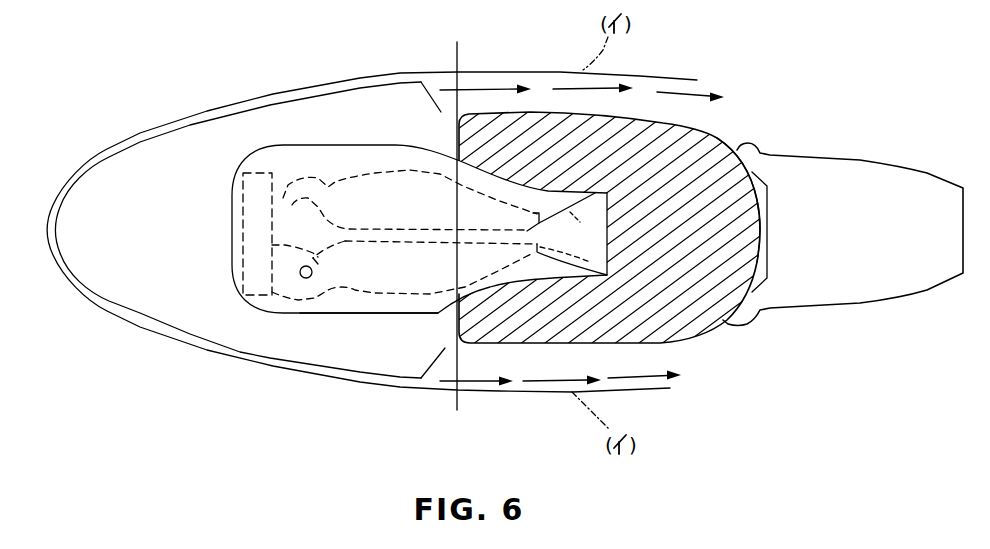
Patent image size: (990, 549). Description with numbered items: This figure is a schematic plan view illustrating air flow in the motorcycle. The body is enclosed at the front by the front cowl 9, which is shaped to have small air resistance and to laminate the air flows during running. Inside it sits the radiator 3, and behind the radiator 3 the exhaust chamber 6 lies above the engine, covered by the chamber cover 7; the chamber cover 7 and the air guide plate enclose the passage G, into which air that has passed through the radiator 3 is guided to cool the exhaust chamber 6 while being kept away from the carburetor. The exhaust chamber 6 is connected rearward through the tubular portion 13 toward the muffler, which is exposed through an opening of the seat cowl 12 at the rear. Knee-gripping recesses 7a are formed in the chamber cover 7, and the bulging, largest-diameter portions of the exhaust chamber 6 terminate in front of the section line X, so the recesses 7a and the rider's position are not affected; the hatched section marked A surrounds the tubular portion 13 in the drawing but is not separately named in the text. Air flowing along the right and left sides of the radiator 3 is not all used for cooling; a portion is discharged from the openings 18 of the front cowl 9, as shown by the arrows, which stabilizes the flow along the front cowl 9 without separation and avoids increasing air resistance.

The front cowl 9 is at (97, 178).
The openings 18 is at (428, 92).
The line X—X' X is at (466, 230).
The chamber cover 7 is at (350, 157).
The passage G is at (346, 313).
The radiator 3 is at (246, 236).
The exhaust chamber 6 is at (400, 182).
The tubular portion 13 is at (567, 236).
The knee-gripping recesses 7a is at (497, 176).
The holder region A is at (717, 144).
The seat cowl 12 is at (889, 183).